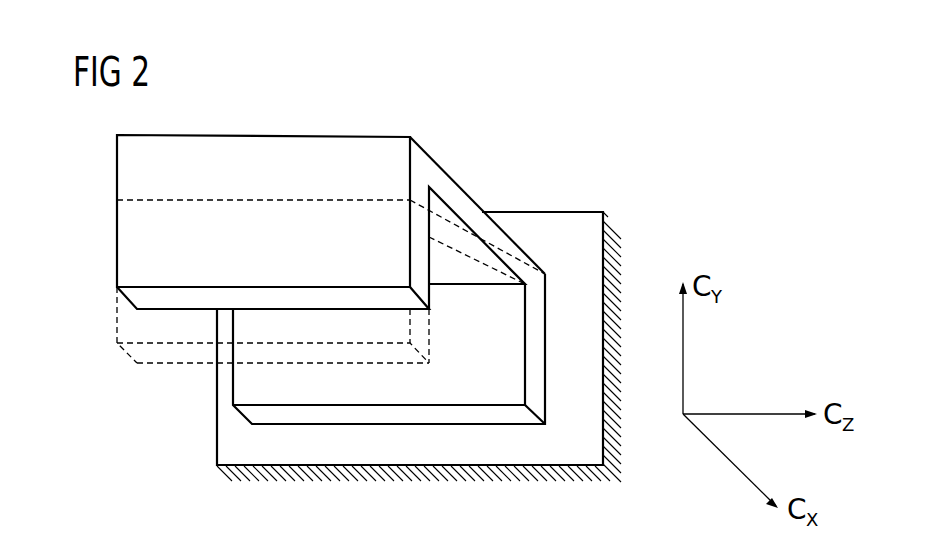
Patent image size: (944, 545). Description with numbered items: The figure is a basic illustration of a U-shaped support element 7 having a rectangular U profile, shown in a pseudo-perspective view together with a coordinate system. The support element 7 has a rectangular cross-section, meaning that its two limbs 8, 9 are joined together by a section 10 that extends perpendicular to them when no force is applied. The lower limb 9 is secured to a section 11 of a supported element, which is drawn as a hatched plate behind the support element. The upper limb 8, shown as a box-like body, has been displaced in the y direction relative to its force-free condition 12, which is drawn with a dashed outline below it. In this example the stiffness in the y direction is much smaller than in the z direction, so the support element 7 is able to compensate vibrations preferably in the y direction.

The support element 7 is at (481, 172).
The limb 8 is at (339, 155).
The limb 9 is at (537, 350).
The section 10 is at (497, 240).
The section of supported element 11 is at (581, 227).
The force-free condition 12 is at (168, 353).